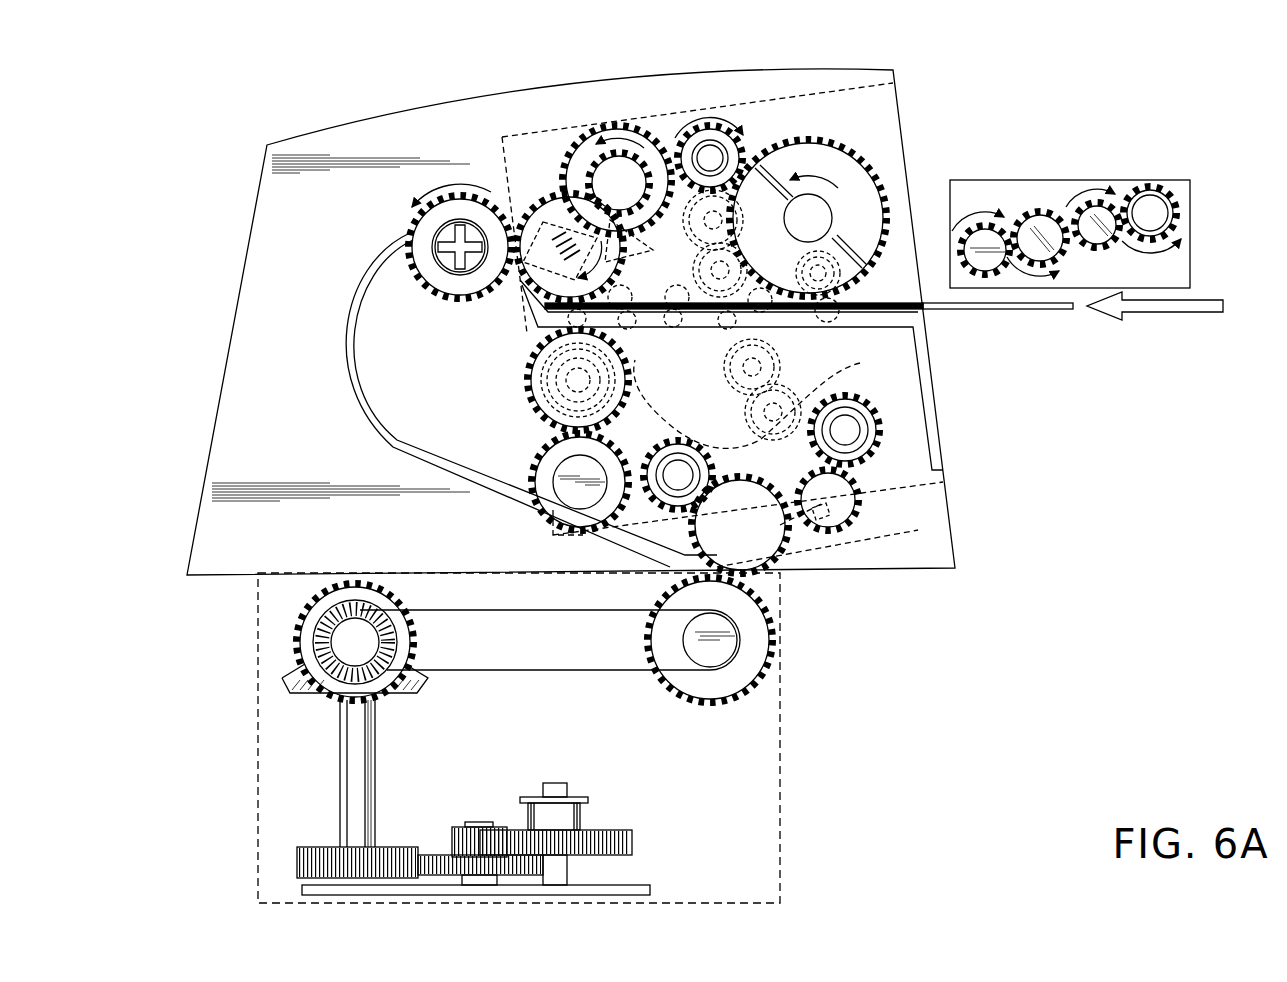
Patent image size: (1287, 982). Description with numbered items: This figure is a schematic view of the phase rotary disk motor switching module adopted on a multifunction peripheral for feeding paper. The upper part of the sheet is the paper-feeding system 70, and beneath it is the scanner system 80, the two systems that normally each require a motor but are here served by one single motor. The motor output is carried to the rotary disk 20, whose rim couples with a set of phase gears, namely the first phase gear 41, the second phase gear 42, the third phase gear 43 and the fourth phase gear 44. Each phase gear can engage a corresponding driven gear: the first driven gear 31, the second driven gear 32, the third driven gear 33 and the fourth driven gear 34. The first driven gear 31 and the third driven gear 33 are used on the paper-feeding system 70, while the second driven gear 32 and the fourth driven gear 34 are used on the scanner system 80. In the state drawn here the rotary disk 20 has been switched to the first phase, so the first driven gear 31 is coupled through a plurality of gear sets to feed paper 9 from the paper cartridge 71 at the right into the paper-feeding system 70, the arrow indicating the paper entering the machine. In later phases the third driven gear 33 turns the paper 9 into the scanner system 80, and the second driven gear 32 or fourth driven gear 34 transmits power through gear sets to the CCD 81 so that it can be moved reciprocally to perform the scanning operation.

The paper-feeding system 70 is at (395, 128).
The rotary disk 20 is at (835, 350).
The paper 9 is at (1047, 309).
The fourth phase gear 44 is at (527, 330).
The first phase gear 41 is at (680, 150).
The first driven gear 31 is at (710, 140).
The third phase gear 43 is at (823, 268).
The second phase gear 42 is at (805, 392).
The third driven gear 33 is at (540, 380).
The second driven gear 32 is at (673, 483).
The fourth driven gear 34 is at (862, 445).
The paper cartridge 71 is at (1020, 190).
The scanner system 80 is at (770, 800).
The CCD 81 is at (565, 783).